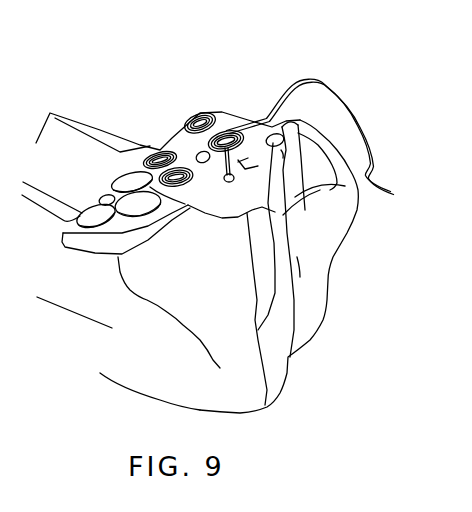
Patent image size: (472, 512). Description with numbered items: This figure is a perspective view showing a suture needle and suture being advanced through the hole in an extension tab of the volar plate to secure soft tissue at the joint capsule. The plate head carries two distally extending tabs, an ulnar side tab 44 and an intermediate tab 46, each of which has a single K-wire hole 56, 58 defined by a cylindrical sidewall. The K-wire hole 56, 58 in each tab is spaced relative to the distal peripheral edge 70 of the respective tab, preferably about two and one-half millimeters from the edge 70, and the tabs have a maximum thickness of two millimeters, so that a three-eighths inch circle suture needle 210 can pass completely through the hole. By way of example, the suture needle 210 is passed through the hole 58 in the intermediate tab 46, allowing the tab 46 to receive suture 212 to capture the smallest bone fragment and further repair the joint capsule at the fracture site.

The suture needle 210 is at (228, 173).
The suture 212 is at (276, 108).
The K-wire hole 56 is at (276, 140).
The ulnar side tab 44 is at (267, 162).
The distal peripheral edge 70 is at (267, 197).
The intermediate tab 46 is at (228, 205).
The K-wire hole 58 is at (231, 179).